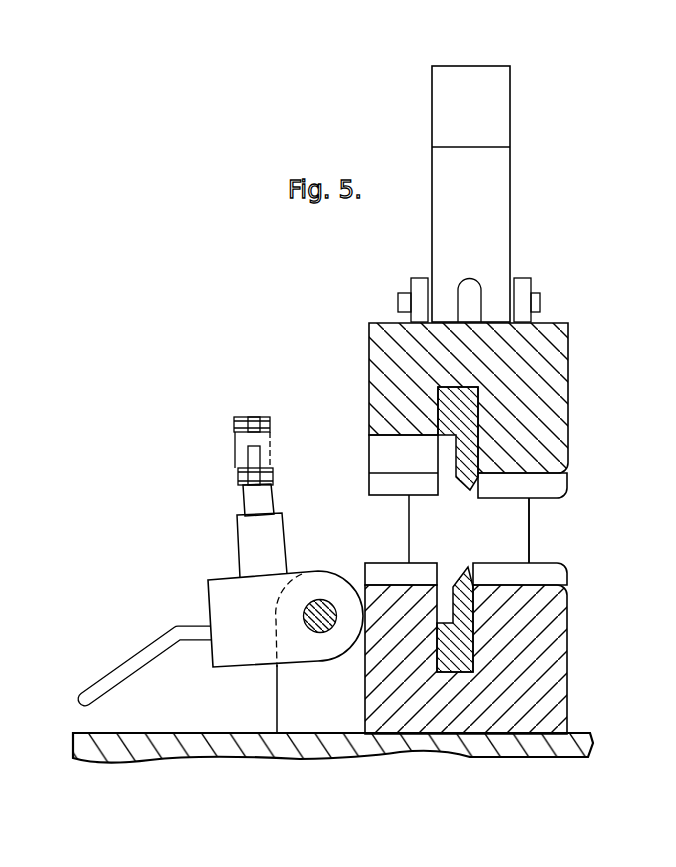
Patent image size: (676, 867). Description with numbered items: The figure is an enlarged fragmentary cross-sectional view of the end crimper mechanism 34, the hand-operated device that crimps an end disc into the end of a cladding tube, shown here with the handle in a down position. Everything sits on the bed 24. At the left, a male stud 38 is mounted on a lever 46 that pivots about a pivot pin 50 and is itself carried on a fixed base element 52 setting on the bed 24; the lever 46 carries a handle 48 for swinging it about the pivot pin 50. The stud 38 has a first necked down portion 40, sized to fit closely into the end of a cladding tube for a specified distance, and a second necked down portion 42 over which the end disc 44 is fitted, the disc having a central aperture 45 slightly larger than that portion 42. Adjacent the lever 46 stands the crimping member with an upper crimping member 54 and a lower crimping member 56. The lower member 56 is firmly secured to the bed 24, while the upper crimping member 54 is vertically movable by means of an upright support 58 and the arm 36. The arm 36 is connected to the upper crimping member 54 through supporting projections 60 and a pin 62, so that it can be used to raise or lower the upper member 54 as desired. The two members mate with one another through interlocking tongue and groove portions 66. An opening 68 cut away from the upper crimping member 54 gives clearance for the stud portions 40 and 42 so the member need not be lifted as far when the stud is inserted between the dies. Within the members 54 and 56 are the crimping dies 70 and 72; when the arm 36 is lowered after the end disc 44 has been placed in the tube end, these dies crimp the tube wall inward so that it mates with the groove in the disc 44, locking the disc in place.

The bed 24 is at (465, 747).
The end crimper mechanism 34 is at (485, 410).
The lever 36 is at (490, 95).
The male stud 38 is at (254, 537).
The first necked down portion 40 is at (254, 500).
The second necked down portion 42 is at (254, 458).
The end disc 44 is at (263, 426).
The central aperture 45 is at (252, 418).
The lever 46 is at (222, 600).
The handle 48 is at (128, 669).
The pivot pin 50 is at (321, 623).
The fixed base element 52 is at (286, 706).
The upper crimping member 54 is at (556, 440).
The lower crimping member 56 is at (557, 660).
The upright support 58 is at (524, 539).
The supporting projections 60 is at (418, 284).
The pin 62 is at (535, 303).
The tongue and groove portions 66 is at (392, 488).
The opening 68 is at (382, 456).
The upper crimping die 70 is at (462, 459).
The lower crimping die 72 is at (461, 573).